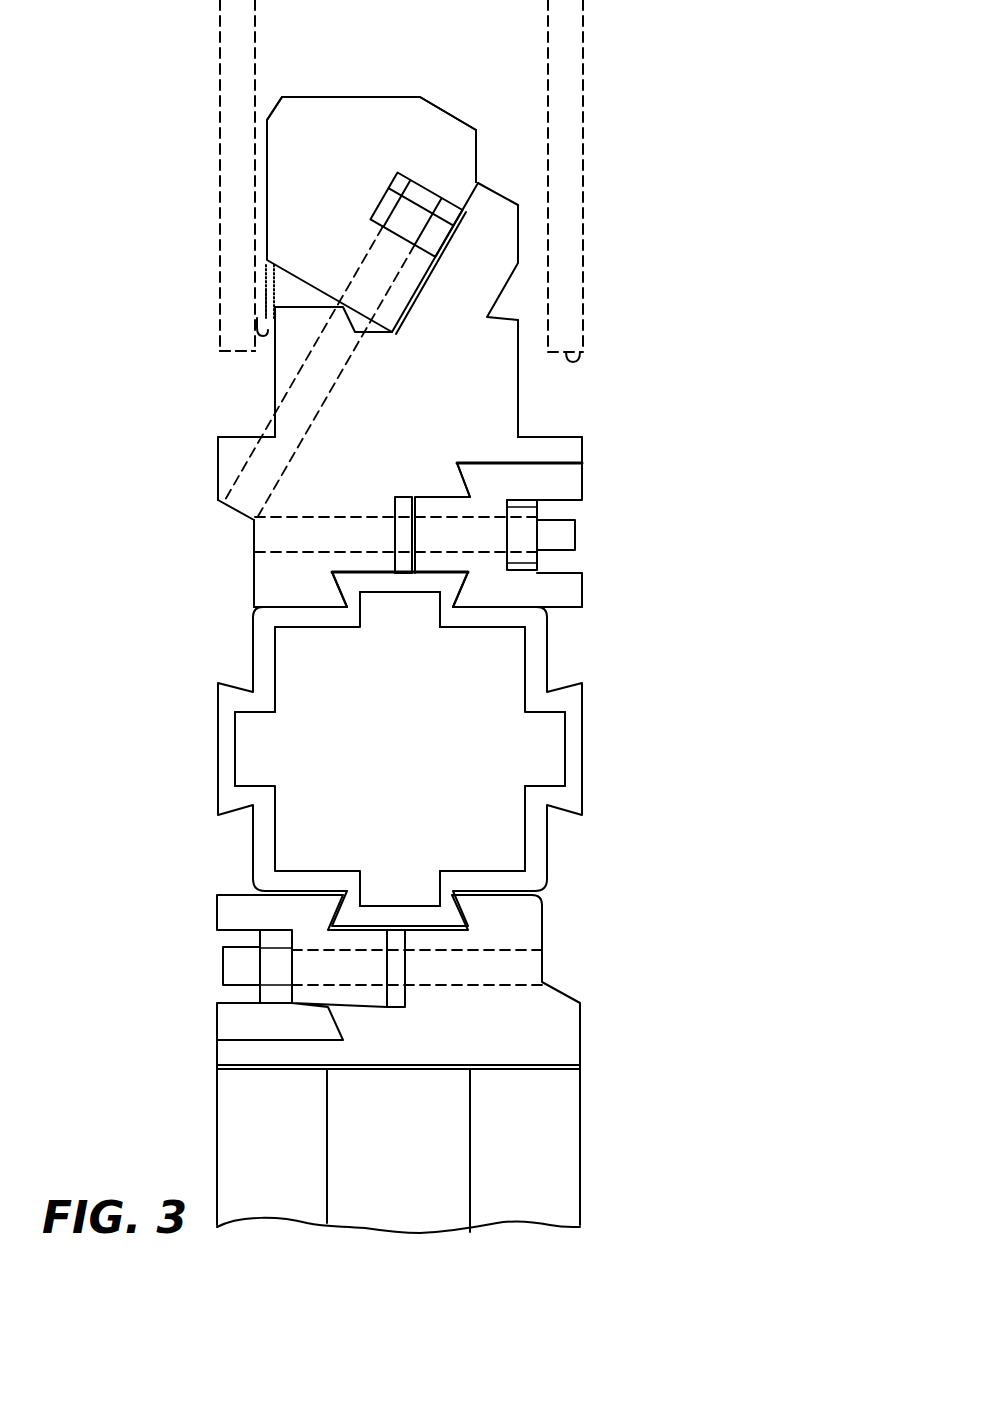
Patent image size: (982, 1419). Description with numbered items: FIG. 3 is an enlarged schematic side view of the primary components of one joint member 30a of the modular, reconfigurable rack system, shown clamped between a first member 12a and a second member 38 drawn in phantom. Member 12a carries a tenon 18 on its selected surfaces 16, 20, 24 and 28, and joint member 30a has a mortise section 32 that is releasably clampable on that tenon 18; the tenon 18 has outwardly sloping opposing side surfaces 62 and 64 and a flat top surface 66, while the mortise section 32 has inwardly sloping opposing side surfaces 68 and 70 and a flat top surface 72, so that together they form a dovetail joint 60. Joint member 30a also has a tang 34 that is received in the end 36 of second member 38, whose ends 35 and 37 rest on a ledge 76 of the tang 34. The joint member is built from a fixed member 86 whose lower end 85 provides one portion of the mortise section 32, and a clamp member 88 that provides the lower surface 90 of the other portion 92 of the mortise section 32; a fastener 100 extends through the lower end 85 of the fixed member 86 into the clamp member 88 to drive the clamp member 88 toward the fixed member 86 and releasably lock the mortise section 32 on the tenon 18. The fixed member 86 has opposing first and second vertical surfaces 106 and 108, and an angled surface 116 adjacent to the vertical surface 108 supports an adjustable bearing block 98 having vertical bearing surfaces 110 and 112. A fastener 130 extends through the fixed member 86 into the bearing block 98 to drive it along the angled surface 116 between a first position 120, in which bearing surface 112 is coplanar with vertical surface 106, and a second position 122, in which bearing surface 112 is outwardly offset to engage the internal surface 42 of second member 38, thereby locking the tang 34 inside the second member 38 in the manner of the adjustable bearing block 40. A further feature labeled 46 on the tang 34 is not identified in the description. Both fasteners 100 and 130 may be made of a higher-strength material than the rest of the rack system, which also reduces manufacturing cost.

The member 12a is at (235, 855).
The surface 16 is at (547, 648).
The tenon 18 is at (405, 583).
The surface 20 is at (483, 608).
The surface 24 is at (275, 678).
The surface 28 is at (487, 873).
The joint member 30a is at (632, 501).
The mortise section 32 is at (222, 560).
The tang 34 is at (612, 415).
The end of second member 35 is at (580, 357).
The end of second member 36 is at (632, 267).
The end of second member 37 is at (233, 353).
The second member 38 is at (583, 148).
The adjustable bearing block 40 is at (267, 185).
The internal surface 42 is at (257, 330).
The shoulder 46 is at (553, 437).
The dovetail joint 60 is at (547, 578).
The outwardly sloping side surface 62 is at (540, 600).
The outwardly sloping side surface 64 is at (326, 593).
The flat top surface 66 is at (537, 545).
The inwardly sloping side surface 68 is at (327, 583).
The inwardly sloping side surface 70 is at (450, 480).
The flat top surface 72 is at (367, 567).
The ledge 76 is at (240, 436).
The lower end 85 is at (238, 538).
The fixed member 86 is at (275, 457).
The clamp member 88 is at (573, 480).
The lower surface 90 is at (490, 462).
The portion of mortise section 92 is at (492, 365).
The adjustable bearing block 98 is at (450, 110).
The fastener 100 is at (573, 537).
The first vertical surface 106 is at (275, 365).
The second vertical surface 108 is at (518, 215).
The vertical bearing surface 110 is at (476, 142).
The vertical bearing surface 112 is at (267, 142).
The angled surface 116 is at (470, 225).
The first position 120 is at (272, 287).
The second position 122 is at (267, 310).
The fastener 130 is at (420, 202).